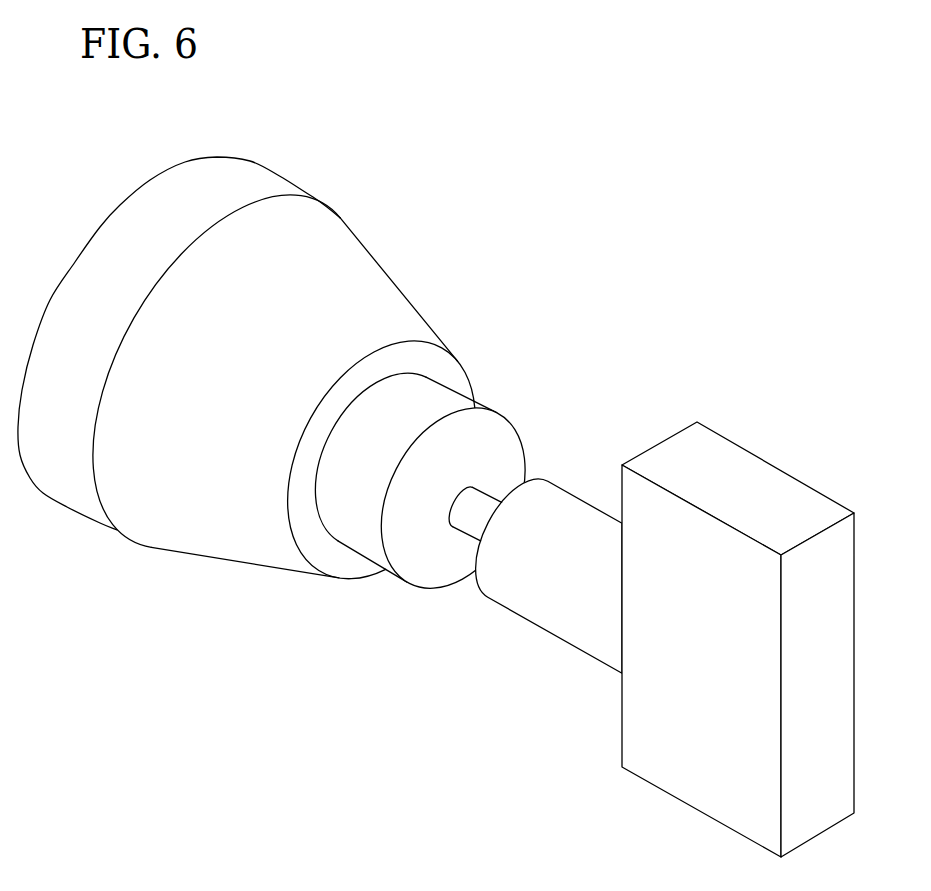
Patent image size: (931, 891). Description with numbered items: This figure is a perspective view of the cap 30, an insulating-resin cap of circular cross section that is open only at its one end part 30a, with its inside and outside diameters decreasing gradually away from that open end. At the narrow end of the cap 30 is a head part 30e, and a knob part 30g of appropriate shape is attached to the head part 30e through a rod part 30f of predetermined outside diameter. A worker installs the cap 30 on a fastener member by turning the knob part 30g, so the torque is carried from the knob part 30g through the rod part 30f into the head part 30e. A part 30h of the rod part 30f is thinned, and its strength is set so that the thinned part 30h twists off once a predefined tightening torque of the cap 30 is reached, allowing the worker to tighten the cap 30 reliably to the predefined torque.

The cap 30 is at (402, 216).
The one end part 30a is at (160, 200).
The head part 30e is at (451, 403).
The rod part 30f is at (559, 510).
The knob part 30g is at (762, 480).
The thinned part 30h is at (482, 507).